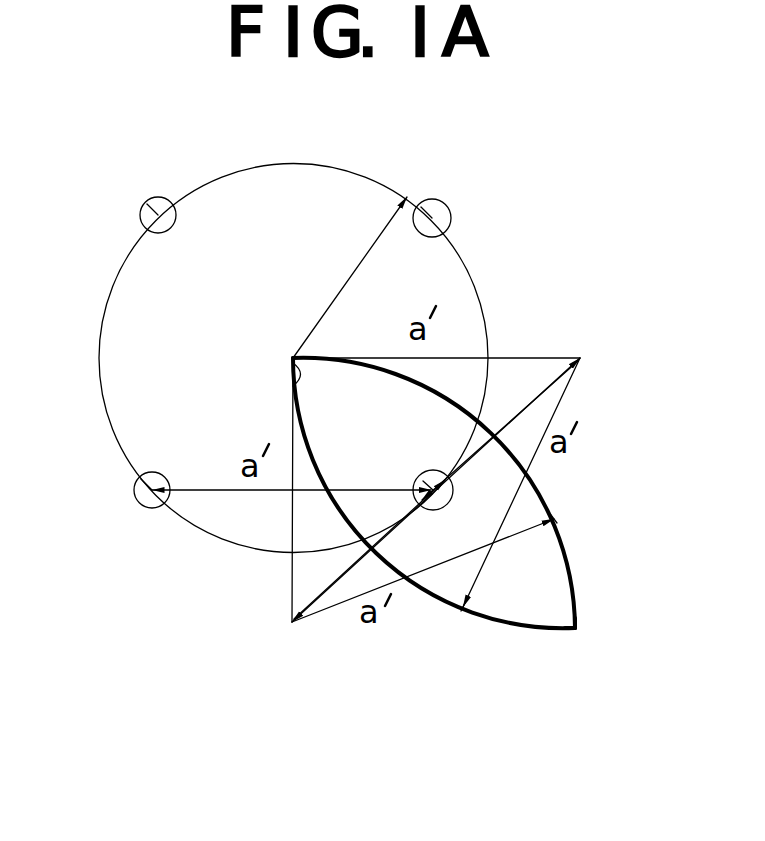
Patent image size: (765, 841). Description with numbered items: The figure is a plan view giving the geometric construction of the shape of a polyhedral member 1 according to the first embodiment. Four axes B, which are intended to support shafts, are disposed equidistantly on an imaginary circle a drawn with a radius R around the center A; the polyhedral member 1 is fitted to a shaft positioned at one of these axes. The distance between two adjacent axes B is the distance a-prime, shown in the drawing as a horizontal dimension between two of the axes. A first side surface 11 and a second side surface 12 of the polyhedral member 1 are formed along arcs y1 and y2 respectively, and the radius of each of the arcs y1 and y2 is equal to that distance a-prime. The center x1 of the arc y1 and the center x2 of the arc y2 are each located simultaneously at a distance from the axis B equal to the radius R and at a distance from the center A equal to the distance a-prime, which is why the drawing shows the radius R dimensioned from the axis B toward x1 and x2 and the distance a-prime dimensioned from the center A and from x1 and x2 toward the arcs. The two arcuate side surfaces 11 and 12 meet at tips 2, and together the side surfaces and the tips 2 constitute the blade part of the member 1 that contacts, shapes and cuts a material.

The polyhedral member 1 is at (432, 511).
The tips 2 is at (292, 387).
The first side surface 11 is at (418, 596).
The second side surface 12 is at (540, 482).
The center A is at (415, 479).
The axes B is at (146, 203).
The radius R is at (436, 409).
The imaginary circle a is at (378, 177).
The center of the arc y1 x1 is at (614, 347).
The center of the arc y2 x2 is at (408, 588).
The arc y1 is at (483, 616).
The arc y2 is at (552, 504).